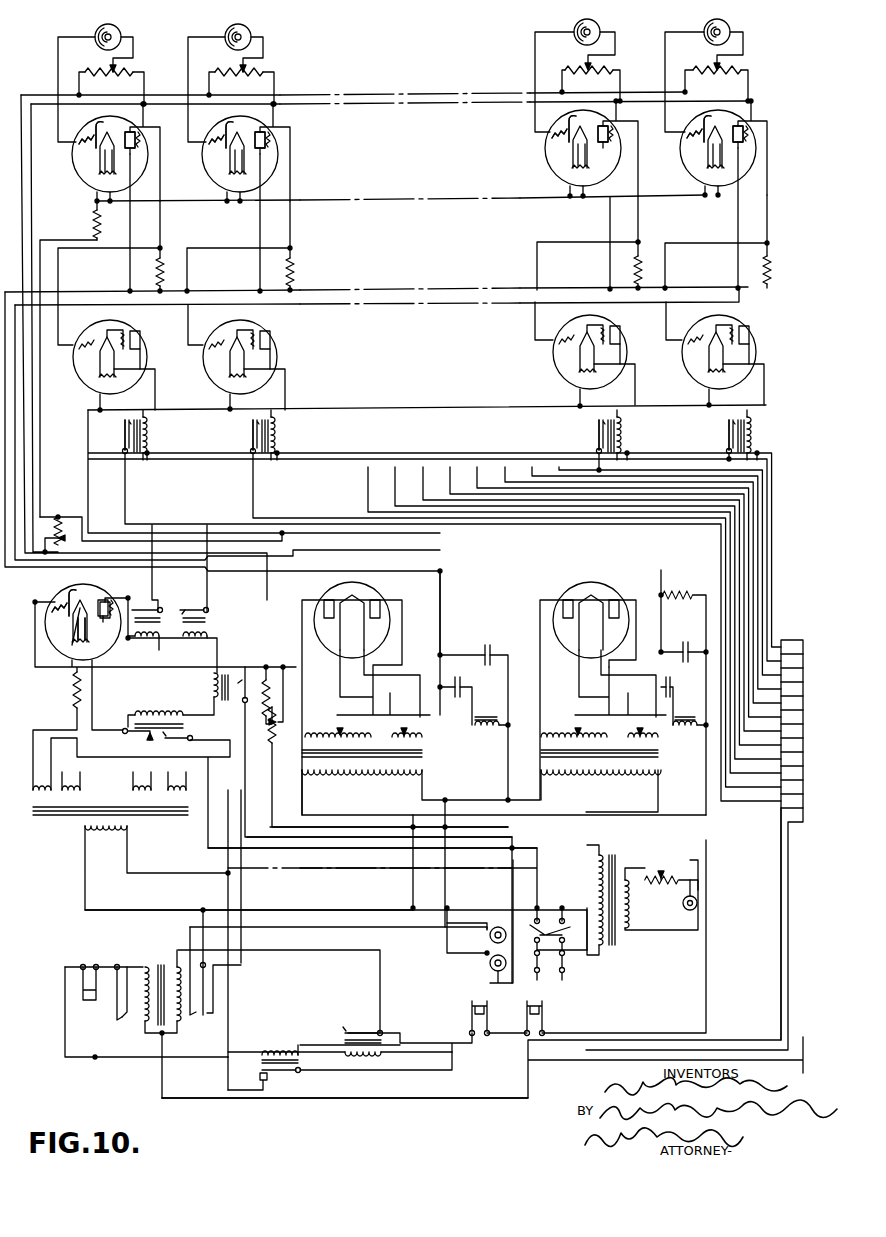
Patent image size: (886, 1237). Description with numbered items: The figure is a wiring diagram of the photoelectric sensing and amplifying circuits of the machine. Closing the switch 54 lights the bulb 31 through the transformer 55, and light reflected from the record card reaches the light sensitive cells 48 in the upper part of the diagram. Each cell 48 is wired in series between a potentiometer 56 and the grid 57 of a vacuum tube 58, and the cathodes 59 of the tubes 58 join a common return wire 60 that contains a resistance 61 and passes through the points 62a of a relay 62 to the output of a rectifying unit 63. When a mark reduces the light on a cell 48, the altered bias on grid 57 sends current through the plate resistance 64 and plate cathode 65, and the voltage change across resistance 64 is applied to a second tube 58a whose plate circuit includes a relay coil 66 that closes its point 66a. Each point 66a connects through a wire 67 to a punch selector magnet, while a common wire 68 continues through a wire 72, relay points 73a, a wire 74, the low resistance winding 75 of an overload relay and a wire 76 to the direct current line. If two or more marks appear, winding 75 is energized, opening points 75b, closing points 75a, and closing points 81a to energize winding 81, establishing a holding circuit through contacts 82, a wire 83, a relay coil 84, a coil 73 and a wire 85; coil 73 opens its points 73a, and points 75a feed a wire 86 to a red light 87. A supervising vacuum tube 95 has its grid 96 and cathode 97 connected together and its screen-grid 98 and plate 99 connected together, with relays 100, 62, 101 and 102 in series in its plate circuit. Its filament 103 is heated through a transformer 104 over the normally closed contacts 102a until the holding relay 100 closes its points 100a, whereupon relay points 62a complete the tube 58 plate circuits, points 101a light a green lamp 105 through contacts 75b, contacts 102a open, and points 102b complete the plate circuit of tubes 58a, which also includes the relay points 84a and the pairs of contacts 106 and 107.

The light sensitive cell 48 is at (113, 27).
The potentiometer 56 is at (134, 68).
The grid 57 is at (78, 160).
The vacuum tube 58 is at (148, 152).
The cathode 59 is at (97, 126).
The common return wire 60 is at (64, 224).
The resistance 61 is at (93, 220).
The plate resistance 64 is at (167, 270).
The plate cathode 65 is at (134, 127).
The second tube 58a is at (148, 365).
The relay coil 66 is at (150, 437).
The relay point 66a is at (128, 424).
The wire 67 is at (126, 496).
The common wire 68 is at (320, 457).
The wire 72 is at (786, 640).
The relay points 100a is at (150, 545).
The vacuum tube 95 is at (45, 640).
The grid 96 is at (58, 610).
The cathode 97 is at (72, 595).
The screen-grid 98 is at (92, 632).
The plate 99 is at (108, 600).
The filament 103 is at (78, 655).
The holding relay 100 is at (144, 638).
The relay 62 is at (195, 640).
The relay points 62a is at (210, 608).
The relay 101 is at (205, 694).
The relay points 101a is at (245, 667).
The relay 102 is at (157, 714).
The contacts 102a is at (152, 742).
The points 102b is at (170, 742).
The transformer 104 is at (85, 822).
The rectifying unit 63 is at (471, 620).
The wire 86 is at (305, 930).
The wire 74 is at (330, 960).
The light 87 is at (500, 925).
The lamp 105 is at (488, 978).
The switch 54 is at (562, 915).
The transformer 55 is at (627, 938).
The bulb 31 is at (683, 906).
The contacts 106 is at (468, 1021).
The contacts 107 is at (544, 1020).
The coil 73 is at (363, 1062).
The relay points 73a is at (347, 1032).
The relay coil 84 is at (305, 1075).
The relay points 84a is at (265, 1085).
The low resistance winding 75 is at (180, 1023).
The points 75a is at (200, 1012).
The points 75b is at (215, 1010).
The contacts 82 is at (88, 985).
The points 81a is at (118, 1022).
The winding 81 is at (142, 1020).
The wire 83 is at (95, 1060).
The wire 76 is at (162, 1080).
The wire 85 is at (788, 820).